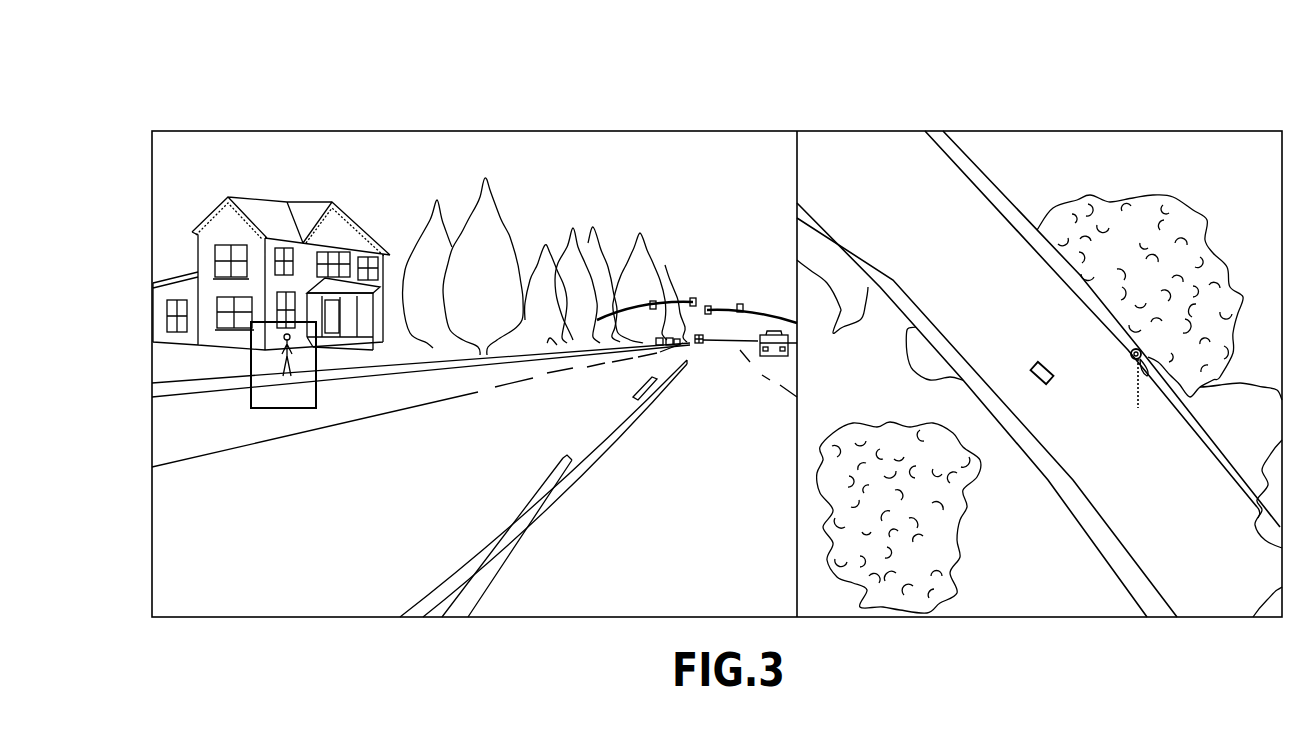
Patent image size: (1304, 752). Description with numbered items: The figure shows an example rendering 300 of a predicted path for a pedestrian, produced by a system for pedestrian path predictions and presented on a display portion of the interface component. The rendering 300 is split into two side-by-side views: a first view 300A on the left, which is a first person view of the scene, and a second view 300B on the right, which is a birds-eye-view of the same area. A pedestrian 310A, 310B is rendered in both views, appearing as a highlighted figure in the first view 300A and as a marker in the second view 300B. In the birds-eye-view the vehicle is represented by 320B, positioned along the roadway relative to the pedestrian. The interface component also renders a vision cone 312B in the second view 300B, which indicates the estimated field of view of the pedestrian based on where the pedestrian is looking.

The rendering 300 is at (140, 128).
The first view 300A is at (480, 130).
The second view 300B is at (1010, 128).
The pedestrian 310A is at (317, 393).
The pedestrian 310B is at (1131, 354).
The vision cone 312B is at (1138, 408).
The vehicle 320B is at (1033, 363).